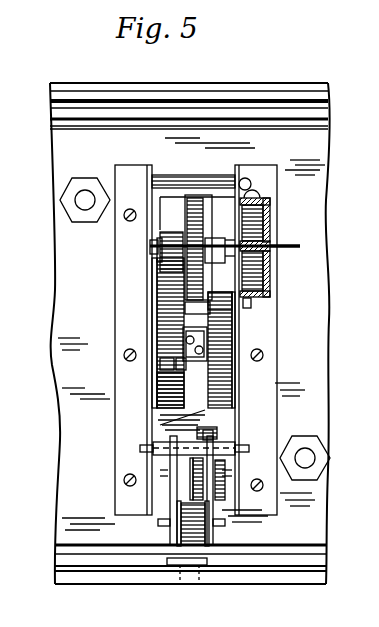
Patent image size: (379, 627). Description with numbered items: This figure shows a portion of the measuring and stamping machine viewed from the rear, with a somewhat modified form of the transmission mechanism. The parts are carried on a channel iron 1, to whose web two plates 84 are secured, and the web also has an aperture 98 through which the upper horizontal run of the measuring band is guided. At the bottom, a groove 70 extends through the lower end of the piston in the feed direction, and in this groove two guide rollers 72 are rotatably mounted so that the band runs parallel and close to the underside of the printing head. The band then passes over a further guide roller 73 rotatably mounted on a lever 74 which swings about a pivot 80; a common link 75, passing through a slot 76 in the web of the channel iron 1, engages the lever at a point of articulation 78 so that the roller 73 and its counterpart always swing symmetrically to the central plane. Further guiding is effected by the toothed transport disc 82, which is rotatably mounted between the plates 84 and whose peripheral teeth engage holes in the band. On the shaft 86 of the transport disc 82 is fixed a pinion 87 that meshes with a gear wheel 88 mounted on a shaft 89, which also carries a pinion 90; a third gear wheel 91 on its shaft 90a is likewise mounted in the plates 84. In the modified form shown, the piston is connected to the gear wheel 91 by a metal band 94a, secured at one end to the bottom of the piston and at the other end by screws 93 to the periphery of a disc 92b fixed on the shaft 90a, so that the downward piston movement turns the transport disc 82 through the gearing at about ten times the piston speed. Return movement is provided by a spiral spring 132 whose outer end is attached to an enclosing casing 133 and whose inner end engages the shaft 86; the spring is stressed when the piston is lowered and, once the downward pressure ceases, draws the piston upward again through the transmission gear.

The channel iron 1 is at (322, 417).
The groove 70 is at (180, 565).
The guide rollers 72 is at (200, 578).
The guide rollers 73 is at (210, 525).
The lever 74 is at (170, 490).
The link 75 is at (222, 428).
The slot 76 is at (218, 437).
The point of articulation 78 is at (220, 488).
The pivot 80 is at (140, 448).
The transport disc 82 is at (153, 198).
The plates 84 is at (152, 262).
The shaft 86 is at (272, 244).
The pinion 87 is at (158, 242).
The gear wheel 88 is at (175, 318).
The shaft 89 is at (160, 303).
The pinion 90 is at (236, 315).
The shaft 90a is at (170, 372).
The gear wheel 91 is at (233, 380).
The disc 92b is at (176, 410).
The screws 93 is at (190, 355).
The metal band 94a is at (185, 332).
The aperture 98 is at (210, 225).
The spiral spring 132 is at (271, 218).
The casing 133 is at (270, 285).